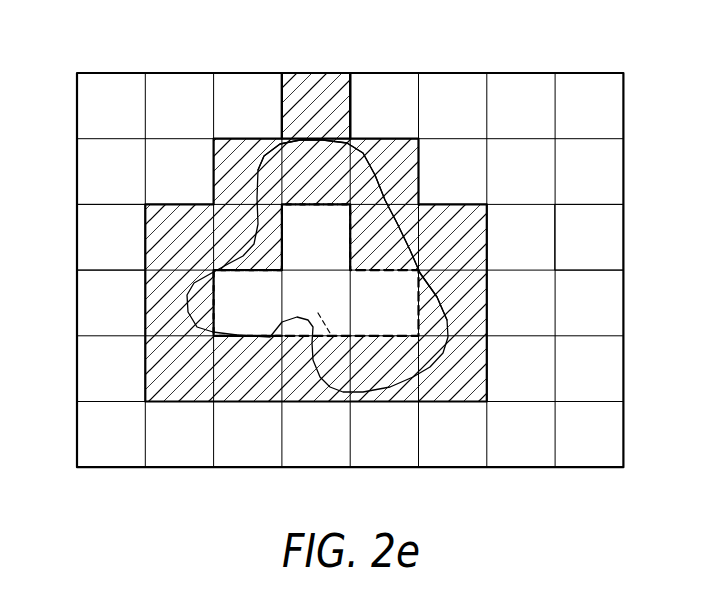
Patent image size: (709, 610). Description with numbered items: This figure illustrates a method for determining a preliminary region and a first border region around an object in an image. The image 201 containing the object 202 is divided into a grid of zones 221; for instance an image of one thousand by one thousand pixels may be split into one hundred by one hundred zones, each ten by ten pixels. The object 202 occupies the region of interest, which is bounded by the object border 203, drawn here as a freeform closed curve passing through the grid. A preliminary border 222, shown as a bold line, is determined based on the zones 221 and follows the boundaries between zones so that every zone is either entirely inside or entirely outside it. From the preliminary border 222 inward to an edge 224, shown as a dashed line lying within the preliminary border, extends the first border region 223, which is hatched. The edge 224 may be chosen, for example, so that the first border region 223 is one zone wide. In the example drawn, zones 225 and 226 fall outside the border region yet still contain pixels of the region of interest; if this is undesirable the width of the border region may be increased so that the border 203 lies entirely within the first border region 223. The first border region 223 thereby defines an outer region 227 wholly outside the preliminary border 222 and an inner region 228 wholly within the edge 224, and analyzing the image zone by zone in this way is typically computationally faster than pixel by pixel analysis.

The image 201 is at (350, 243).
The object 202 is at (316, 98).
The border 203 is at (352, 178).
The zones 221 is at (618, 237).
The preliminary border 222 is at (413, 237).
The first border region 223 is at (413, 237).
The edge 224 is at (316, 358).
The zone 225 is at (317, 326).
The zone 226 is at (151, 303).
The outer region 227 is at (82, 237).
The inner region 228 is at (291, 160).